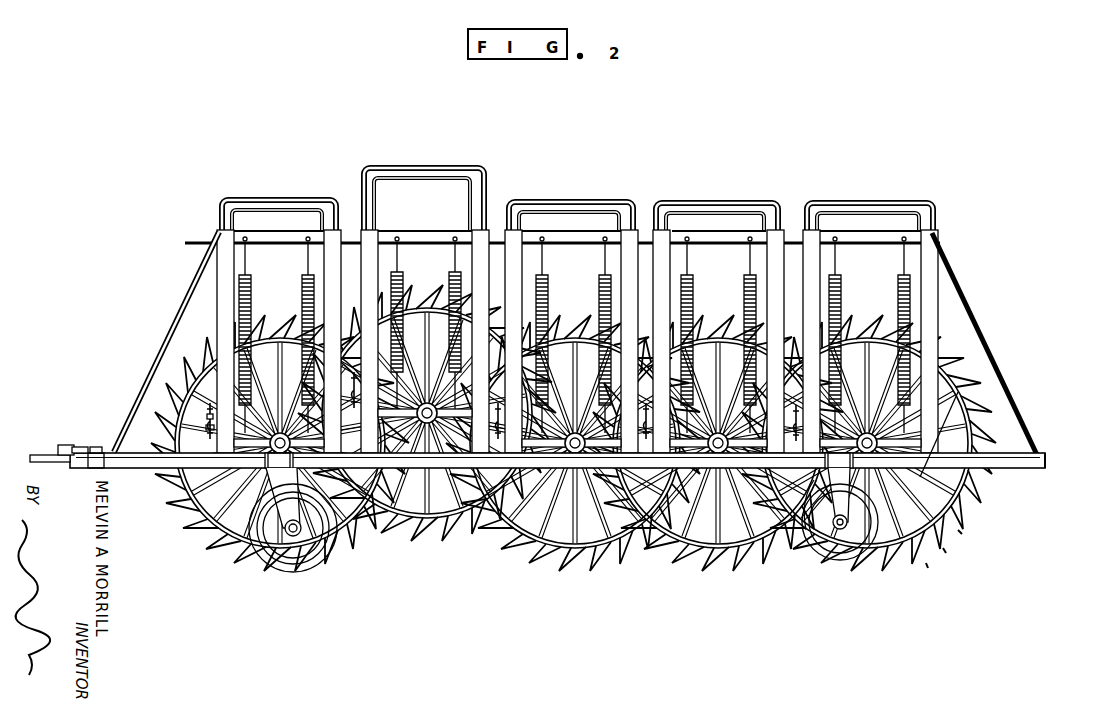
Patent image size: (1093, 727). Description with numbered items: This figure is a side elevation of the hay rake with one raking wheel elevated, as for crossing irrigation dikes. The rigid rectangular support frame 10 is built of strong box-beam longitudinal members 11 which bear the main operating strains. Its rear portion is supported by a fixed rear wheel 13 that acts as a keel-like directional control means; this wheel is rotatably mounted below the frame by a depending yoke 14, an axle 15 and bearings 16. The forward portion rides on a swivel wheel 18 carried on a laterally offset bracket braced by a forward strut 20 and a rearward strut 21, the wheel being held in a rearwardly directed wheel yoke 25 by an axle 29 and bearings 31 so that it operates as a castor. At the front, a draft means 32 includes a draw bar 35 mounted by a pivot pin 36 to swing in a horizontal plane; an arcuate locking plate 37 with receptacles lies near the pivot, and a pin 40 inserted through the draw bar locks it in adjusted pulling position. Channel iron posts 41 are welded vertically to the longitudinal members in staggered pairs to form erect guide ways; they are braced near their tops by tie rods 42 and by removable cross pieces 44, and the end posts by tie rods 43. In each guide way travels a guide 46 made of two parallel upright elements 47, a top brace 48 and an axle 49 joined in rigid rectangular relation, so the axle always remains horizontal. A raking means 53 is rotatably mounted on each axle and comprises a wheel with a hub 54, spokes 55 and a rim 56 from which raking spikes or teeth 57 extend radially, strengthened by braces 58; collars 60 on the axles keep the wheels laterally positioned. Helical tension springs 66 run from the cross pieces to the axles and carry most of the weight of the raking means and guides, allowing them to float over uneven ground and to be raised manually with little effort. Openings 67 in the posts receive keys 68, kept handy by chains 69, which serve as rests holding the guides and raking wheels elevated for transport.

The support frame 10 is at (1048, 463).
The longitudinal members 11 is at (1022, 470).
The rear wheel 13 is at (805, 560).
The yoke 14 is at (850, 560).
The axle 15 is at (832, 565).
The bearings 16 is at (820, 560).
The swivel wheel 18 is at (298, 575).
The forward strut 20 is at (172, 465).
The rearward strut 21 is at (425, 535).
The wheel yoke 25 is at (268, 565).
The axle 29 is at (290, 545).
The bearings 31 is at (310, 565).
The draft means 32 is at (89, 446).
The draw bar 35 is at (52, 457).
The pivot pin 36 is at (96, 446).
The locking plate 37 is at (104, 452).
The pin 40 is at (68, 445).
The posts 41 is at (218, 232).
The tie rods 42 is at (348, 242).
The diagonal brace 43 is at (182, 310).
The cross pieces 44 is at (258, 232).
The guide 46 is at (304, 198).
The upright elements 47 is at (378, 214).
The top brace 48 is at (404, 180).
The axle 49 is at (205, 500).
The raking means 53 is at (525, 560).
The hubs 54 is at (985, 412).
The spokes 55 is at (962, 388).
The rims 56 is at (575, 565).
The raking spikes or teeth 57 is at (603, 570).
The braces 58 is at (360, 535).
The collars 60 is at (712, 570).
The helical tension springs 66 is at (241, 288).
The openings 67 is at (218, 400).
The keys 68 is at (208, 427).
The chains 69 is at (208, 415).